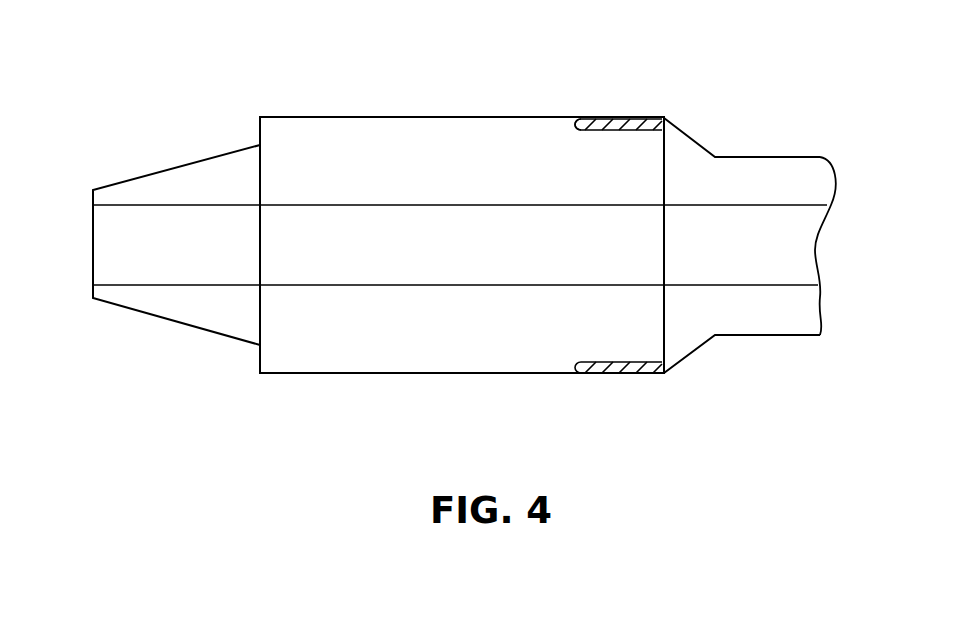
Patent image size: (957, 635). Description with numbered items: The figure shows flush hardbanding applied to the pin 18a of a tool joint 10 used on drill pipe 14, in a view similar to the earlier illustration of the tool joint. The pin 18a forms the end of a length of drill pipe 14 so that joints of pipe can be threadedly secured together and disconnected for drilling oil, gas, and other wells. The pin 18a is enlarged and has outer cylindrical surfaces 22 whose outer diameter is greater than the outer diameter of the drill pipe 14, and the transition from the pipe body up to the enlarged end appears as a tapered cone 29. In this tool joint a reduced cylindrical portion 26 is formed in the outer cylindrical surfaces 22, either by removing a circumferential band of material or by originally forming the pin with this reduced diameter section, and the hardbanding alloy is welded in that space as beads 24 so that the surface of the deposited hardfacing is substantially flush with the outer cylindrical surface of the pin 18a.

The tool joint 10 is at (335, 117).
The drill pipe 14 is at (760, 157).
The pin 18a is at (538, 117).
The outer cylindrical surfaces 22 is at (425, 117).
The beads 24 is at (632, 125).
The reduced cylindrical portion 26 is at (625, 131).
The tapered cone 29 is at (180, 166).